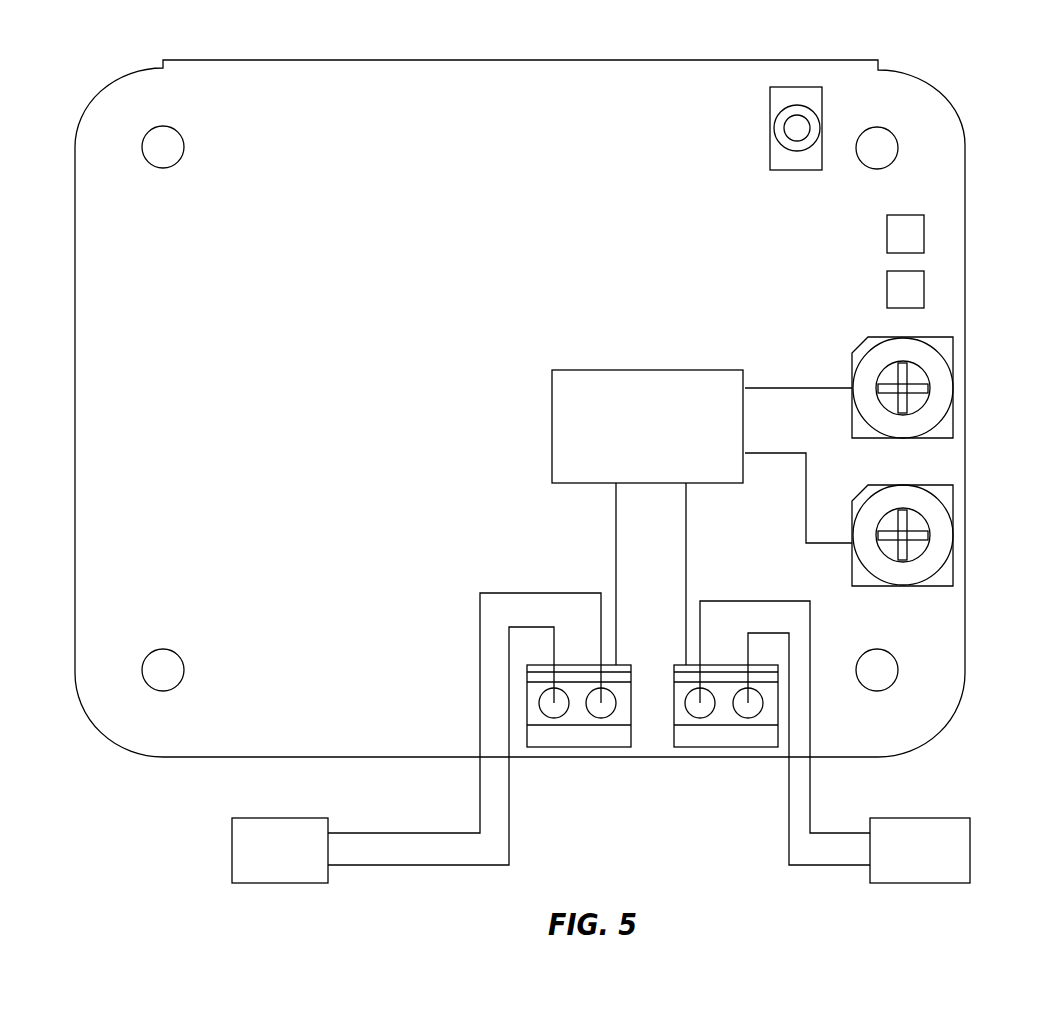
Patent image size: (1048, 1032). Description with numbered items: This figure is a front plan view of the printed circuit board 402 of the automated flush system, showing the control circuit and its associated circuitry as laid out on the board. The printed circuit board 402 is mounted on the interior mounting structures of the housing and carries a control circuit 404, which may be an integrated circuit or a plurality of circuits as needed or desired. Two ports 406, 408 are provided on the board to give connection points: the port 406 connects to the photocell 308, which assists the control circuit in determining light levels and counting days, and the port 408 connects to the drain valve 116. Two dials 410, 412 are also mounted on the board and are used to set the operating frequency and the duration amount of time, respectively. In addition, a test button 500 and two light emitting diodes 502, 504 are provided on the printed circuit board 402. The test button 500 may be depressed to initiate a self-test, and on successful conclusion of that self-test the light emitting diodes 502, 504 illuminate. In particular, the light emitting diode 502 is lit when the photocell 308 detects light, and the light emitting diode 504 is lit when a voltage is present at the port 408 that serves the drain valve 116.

The printed circuit board 402 is at (295, 388).
The control circuit 404 is at (662, 440).
The port 406 is at (582, 748).
The port 408 is at (721, 748).
The dial 410 is at (954, 360).
The dial 412 is at (954, 513).
The test button 500 is at (826, 104).
The light emitting diode 502 is at (925, 232).
The light emitting diode 504 is at (925, 288).
The photocell 308 is at (296, 858).
The drain valve 116 is at (935, 858).